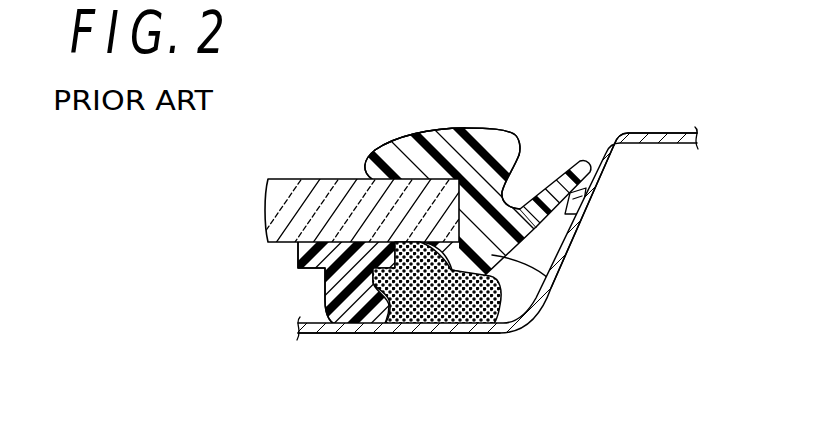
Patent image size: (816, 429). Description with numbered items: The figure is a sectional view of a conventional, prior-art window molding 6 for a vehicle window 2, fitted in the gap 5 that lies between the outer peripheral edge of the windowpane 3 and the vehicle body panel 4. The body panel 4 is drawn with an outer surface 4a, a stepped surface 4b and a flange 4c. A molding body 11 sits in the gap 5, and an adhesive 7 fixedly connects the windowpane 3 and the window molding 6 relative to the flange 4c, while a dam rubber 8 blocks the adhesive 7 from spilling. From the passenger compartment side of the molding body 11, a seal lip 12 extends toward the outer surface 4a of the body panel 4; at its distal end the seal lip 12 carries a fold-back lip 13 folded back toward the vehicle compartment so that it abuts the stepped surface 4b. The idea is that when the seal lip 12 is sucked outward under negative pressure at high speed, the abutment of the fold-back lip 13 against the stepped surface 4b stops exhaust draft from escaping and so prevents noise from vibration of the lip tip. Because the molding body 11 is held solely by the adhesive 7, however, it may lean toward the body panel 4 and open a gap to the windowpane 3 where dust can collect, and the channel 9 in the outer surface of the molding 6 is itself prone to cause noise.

The window 2 is at (342, 152).
The windowpane 3 is at (298, 179).
The vehicle body panel 4 is at (609, 216).
The outer surface 4a is at (673, 132).
The stepped surface 4b is at (573, 255).
The flange 4c is at (430, 327).
The gap 5 is at (550, 237).
The window molding 6 is at (469, 117).
The adhesive 7 is at (472, 310).
The dam rubber 8 is at (350, 313).
The channel 9 is at (522, 172).
The molding body 11 is at (423, 130).
The seal lip 12 is at (548, 185).
The fold-back lip 13 is at (598, 188).